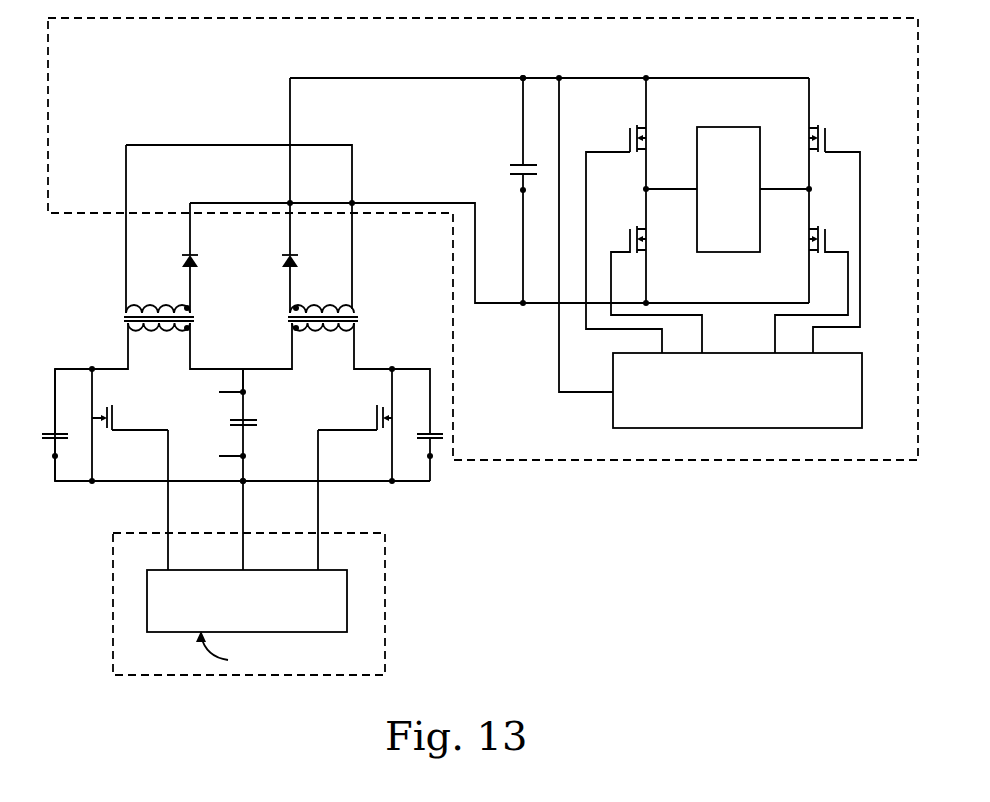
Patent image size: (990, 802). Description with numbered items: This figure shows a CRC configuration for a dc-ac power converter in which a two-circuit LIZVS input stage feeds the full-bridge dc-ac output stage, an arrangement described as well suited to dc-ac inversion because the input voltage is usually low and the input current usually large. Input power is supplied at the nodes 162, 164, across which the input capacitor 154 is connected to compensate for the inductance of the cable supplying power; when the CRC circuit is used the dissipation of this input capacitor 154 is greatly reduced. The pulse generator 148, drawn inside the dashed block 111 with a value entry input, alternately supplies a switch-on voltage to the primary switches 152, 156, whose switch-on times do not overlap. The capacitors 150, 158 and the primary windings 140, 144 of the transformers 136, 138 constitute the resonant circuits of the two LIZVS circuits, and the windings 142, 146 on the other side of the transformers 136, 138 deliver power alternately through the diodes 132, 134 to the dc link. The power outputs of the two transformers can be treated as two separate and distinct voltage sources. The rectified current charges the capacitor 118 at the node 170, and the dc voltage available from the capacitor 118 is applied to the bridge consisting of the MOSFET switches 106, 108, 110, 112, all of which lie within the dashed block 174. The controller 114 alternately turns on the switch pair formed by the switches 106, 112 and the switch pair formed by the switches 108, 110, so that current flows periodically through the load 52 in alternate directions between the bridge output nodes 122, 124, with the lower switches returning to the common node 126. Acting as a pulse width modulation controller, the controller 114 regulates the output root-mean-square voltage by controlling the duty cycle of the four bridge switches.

The load 52 is at (728, 189).
The MOSFET switch 106 is at (628, 133).
The MOSFET switch 108 is at (825, 127).
The MOSFET switch 110 is at (628, 233).
The value entry / control block 111 is at (393, 565).
The MOSFET switch 112 is at (827, 232).
The controller 114 is at (737, 390).
The capacitor 118 is at (514, 165).
The bridge output node 122 is at (648, 188).
The bridge output node 124 is at (807, 188).
The bridge return node 126 is at (648, 302).
The diode 132 is at (183, 263).
The diode 134 is at (318, 253).
The transformer 136 is at (121, 322).
The transformer 138 is at (353, 322).
The primary winding 140 is at (168, 333).
The primary winding 142 is at (164, 301).
The primary winding 144 is at (323, 333).
The secondary winding 146 is at (323, 301).
The pulse generator 148 is at (248, 619).
The capacitor 150 is at (47, 437).
The primary switch 152 is at (112, 405).
The input capacitor 154 is at (258, 425).
The primary switch 156 is at (373, 408).
The capacitor 158 is at (436, 444).
The input node 162 is at (241, 362).
The input node 164 is at (246, 483).
The DC bus node 170 is at (523, 78).
The power converter module 174 is at (666, 462).